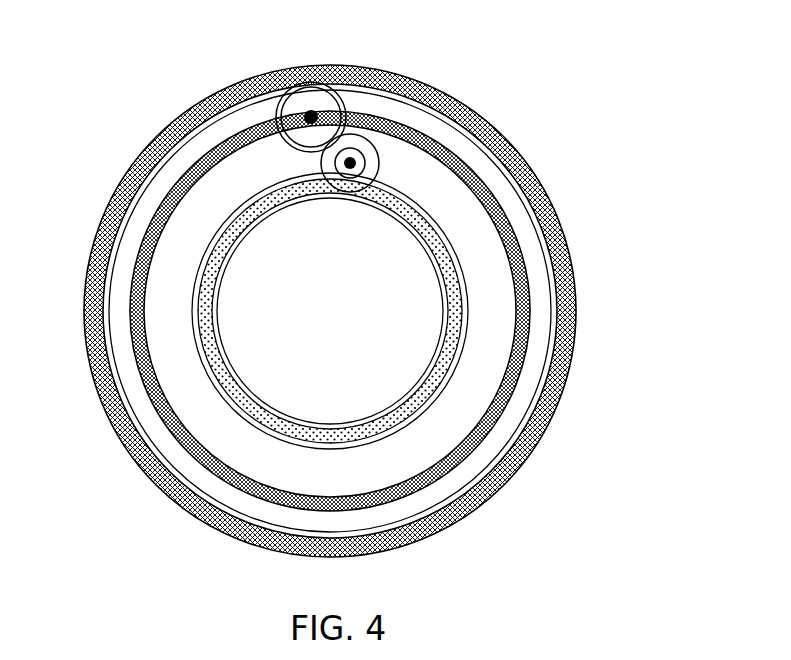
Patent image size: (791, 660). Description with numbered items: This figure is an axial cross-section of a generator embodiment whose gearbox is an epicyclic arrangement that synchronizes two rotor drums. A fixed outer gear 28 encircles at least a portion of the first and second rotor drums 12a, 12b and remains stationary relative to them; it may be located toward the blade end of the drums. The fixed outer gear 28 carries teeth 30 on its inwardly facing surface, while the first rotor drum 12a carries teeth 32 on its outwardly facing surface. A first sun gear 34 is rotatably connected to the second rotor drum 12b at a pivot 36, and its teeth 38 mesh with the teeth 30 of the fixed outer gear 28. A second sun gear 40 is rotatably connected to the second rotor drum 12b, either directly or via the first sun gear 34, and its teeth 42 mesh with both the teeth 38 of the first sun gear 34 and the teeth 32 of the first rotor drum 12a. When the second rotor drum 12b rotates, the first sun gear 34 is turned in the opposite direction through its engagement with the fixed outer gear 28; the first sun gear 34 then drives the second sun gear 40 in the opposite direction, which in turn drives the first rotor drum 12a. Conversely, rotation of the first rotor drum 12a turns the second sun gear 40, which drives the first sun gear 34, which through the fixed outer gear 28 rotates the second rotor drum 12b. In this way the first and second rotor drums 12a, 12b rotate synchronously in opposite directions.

The fixed outer gear 28 is at (475, 108).
The teeth of the fixed outer gear 30 is at (512, 173).
The second rotor drum 12b is at (165, 193).
The teeth of the first rotor drum 32 is at (245, 422).
The first rotor drum 12a is at (235, 377).
The first sun gear 34 is at (309, 98).
The pivot 36 is at (278, 107).
The teeth of the first sun gear 38 is at (338, 92).
The second sun gear 40 is at (351, 181).
The teeth of the second sun gear 42 is at (372, 178).